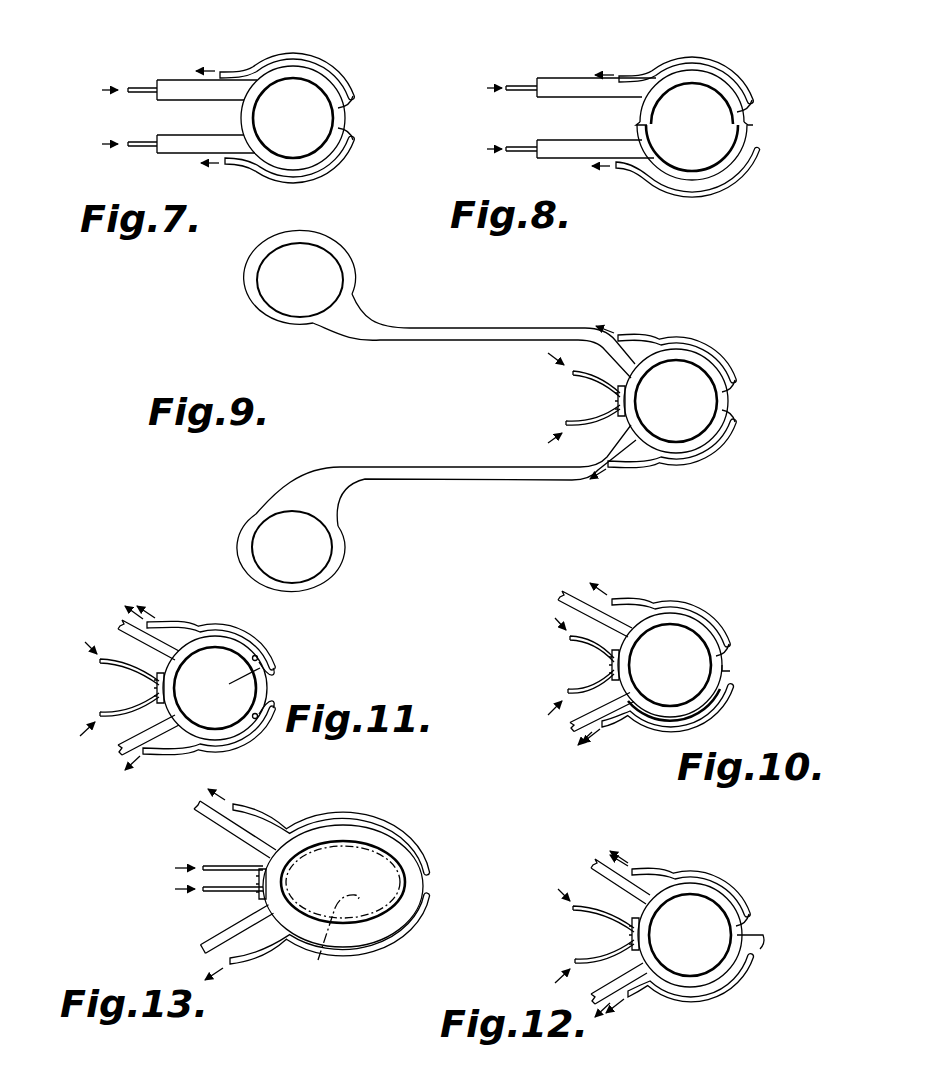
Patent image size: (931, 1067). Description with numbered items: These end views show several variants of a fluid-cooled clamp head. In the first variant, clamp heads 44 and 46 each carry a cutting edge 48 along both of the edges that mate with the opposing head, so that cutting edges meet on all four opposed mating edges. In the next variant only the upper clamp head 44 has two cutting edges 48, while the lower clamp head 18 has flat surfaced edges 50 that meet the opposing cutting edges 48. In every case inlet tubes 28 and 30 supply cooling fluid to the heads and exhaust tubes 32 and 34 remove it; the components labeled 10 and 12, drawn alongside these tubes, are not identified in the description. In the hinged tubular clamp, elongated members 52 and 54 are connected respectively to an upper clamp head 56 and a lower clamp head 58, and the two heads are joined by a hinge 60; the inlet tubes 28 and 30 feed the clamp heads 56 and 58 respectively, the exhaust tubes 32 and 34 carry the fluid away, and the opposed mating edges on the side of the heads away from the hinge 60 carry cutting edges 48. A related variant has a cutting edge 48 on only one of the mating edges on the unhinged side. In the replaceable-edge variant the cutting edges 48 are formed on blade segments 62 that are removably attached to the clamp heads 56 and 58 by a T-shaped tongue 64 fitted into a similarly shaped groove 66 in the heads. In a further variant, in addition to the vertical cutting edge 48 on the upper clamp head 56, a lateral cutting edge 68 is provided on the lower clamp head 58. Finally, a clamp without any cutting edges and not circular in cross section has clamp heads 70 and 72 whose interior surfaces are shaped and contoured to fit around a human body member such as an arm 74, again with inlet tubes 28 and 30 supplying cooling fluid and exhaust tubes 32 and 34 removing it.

In FIG. 7, the lower tubular arm of dilator 10 is at (201, 160).
In FIG. 8, the lower tubular arm of dilator 10 is at (595, 174).
In FIG. 7, the upper tubular arm of dilator 12 is at (207, 65).
In FIG. 8, the upper tubular arm of dilator 12 is at (596, 63).
In FIG. 8, the lower clamp head 18 is at (706, 165).
In FIG. 7, the inlet tube 28 is at (125, 73).
In FIG. 8, the inlet tube 28 is at (504, 68).
In FIG. 9, the inlet tube 28 is at (562, 375).
In FIG. 10, the inlet tube 28 is at (552, 640).
In FIG. 11, the inlet tube 28 is at (92, 663).
In FIG. 12, the inlet tube 28 is at (570, 910).
In FIG. 13, the inlet tube 28 is at (192, 858).
In FIG. 7, the inlet tube 30 is at (113, 128).
In FIG. 8, the inlet tube 30 is at (503, 131).
In FIG. 9, the inlet tube 30 is at (560, 420).
In FIG. 10, the inlet tube 30 is at (563, 685).
In FIG. 11, the inlet tube 30 is at (98, 714).
In FIG. 12, the inlet tube 30 is at (574, 961).
In FIG. 13, the inlet tube 30 is at (192, 892).
In FIG. 7, the exhaust tube 32 is at (275, 58).
In FIG. 8, the exhaust tube 32 is at (674, 60).
In FIG. 9, the exhaust tube 32 is at (676, 348).
In FIG. 10, the exhaust tube 32 is at (662, 608).
In FIG. 11, the exhaust tube 32 is at (221, 638).
In FIG. 12, the exhaust tube 32 is at (686, 883).
In FIG. 13, the exhaust tube 32 is at (447, 839).
In FIG. 7, the exhaust tube 34 is at (277, 175).
In FIG. 8, the exhaust tube 34 is at (676, 190).
In FIG. 9, the exhaust tube 34 is at (683, 449).
In FIG. 10, the exhaust tube 34 is at (670, 713).
In FIG. 11, the exhaust tube 34 is at (209, 740).
In FIG. 12, the exhaust tube 34 is at (683, 988).
In FIG. 13, the exhaust tube 34 is at (336, 936).
In FIG. 7, the upper clamp head 44 is at (294, 70).
In FIG. 8, the upper clamp head 44 is at (701, 72).
In FIG. 7, the clamp head 46 is at (302, 159).
In FIG. 7, the cutting edge 48 is at (300, 118).
In FIG. 8, the cutting edge 48 is at (679, 109).
In FIG. 9, the cutting edge 48 is at (753, 401).
In FIG. 10, the cutting edge 48 is at (752, 643).
In FIG. 11, the cutting edge 48 is at (296, 674).
In FIG. 12, the cutting edge 48 is at (771, 910).
In FIG. 8, the flat surfaced edge 50 is at (697, 133).
In FIG. 10, the flat surfaced edge 50 is at (759, 677).
In FIG. 9, the elongated member 52 is at (440, 328).
In FIG. 10, the elongated member 52 is at (568, 600).
In FIG. 11, the elongated member 52 is at (115, 631).
In FIG. 12, the elongated member 52 is at (590, 874).
In FIG. 13, the elongated member 52 is at (210, 829).
In FIG. 9, the elongated member 54 is at (403, 478).
In FIG. 10, the elongated member 54 is at (573, 719).
In FIG. 11, the elongated member 54 is at (110, 746).
In FIG. 12, the elongated member 54 is at (619, 1002).
In FIG. 13, the elongated member 54 is at (209, 929).
In FIG. 9, the upper clamp head 56 is at (676, 347).
In FIG. 10, the upper clamp head 56 is at (670, 611).
In FIG. 11, the upper clamp head 56 is at (215, 637).
In FIG. 12, the upper clamp head 56 is at (690, 882).
In FIG. 9, the lower clamp head 58 is at (676, 452).
In FIG. 10, the lower clamp head 58 is at (670, 715).
In FIG. 11, the lower clamp head 58 is at (214, 735).
In FIG. 12, the lower clamp head 58 is at (690, 985).
In FIG. 9, the hinge 60 is at (655, 396).
In FIG. 10, the hinge 60 is at (651, 659).
In FIG. 11, the hinge 60 is at (117, 688).
In FIG. 12, the hinge 60 is at (593, 934).
In FIG. 13, the hinge 60 is at (229, 899).
In FIG. 11, the blade segment 62 is at (231, 684).
In FIG. 11, the T-shaped tongue 64 is at (286, 683).
In FIG. 11, the groove 66 is at (227, 658).
In FIG. 12, the lateral cutting edge 68 is at (775, 950).
In FIG. 13, the clamp head 70 is at (319, 825).
In FIG. 13, the clamp head 72 is at (343, 900).
In FIG. 13, the arm 74 is at (333, 943).